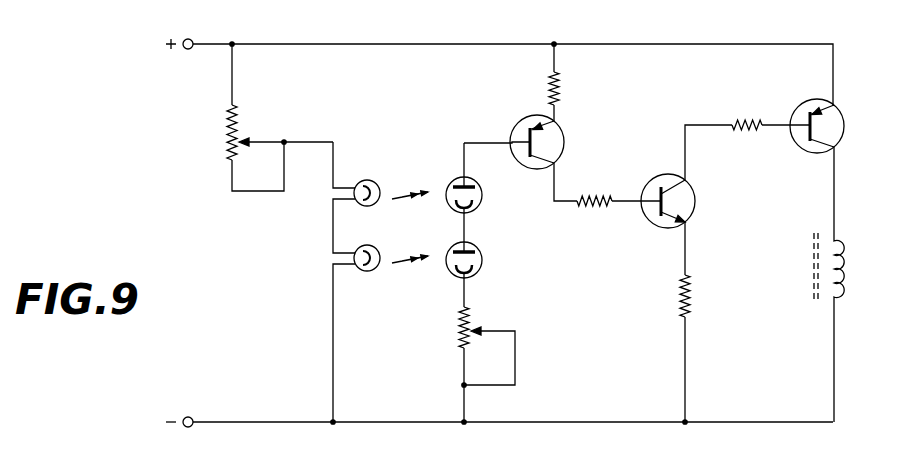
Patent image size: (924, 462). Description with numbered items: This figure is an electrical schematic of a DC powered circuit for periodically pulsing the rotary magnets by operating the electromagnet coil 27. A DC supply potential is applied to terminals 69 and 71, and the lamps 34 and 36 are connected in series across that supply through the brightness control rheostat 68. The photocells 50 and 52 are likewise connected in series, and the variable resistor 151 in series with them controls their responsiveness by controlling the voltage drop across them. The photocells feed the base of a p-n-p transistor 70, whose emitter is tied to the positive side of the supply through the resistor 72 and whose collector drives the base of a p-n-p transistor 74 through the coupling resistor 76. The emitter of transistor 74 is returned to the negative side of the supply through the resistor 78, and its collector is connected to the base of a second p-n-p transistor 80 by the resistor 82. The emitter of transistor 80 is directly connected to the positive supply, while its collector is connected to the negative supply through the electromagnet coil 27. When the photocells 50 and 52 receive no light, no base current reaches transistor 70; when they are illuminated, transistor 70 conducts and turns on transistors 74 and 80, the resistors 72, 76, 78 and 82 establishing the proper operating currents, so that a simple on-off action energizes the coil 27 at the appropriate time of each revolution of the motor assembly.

The terminal 69 is at (187, 39).
The terminal 71 is at (188, 417).
The brightness control rheostat 68 is at (240, 129).
The lamp 34 is at (372, 180).
The lamp 36 is at (360, 270).
The photocell 50 is at (482, 195).
The photocell 52 is at (482, 262).
The variable resistor 151 is at (469, 318).
The resistor 72 is at (559, 87).
The p-n-p transistor 70 is at (565, 146).
The coupling resistor 76 is at (595, 208).
The p-n-p transistor 74 is at (693, 216).
The resistor 78 is at (690, 295).
The resistor 82 is at (749, 118).
The p-n-p transistor 80 is at (806, 153).
The electromagnet coil 27 is at (826, 304).